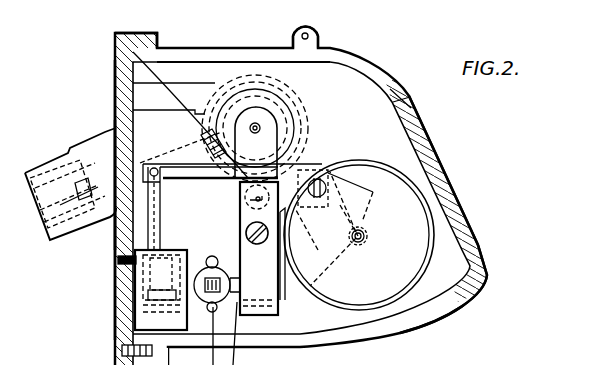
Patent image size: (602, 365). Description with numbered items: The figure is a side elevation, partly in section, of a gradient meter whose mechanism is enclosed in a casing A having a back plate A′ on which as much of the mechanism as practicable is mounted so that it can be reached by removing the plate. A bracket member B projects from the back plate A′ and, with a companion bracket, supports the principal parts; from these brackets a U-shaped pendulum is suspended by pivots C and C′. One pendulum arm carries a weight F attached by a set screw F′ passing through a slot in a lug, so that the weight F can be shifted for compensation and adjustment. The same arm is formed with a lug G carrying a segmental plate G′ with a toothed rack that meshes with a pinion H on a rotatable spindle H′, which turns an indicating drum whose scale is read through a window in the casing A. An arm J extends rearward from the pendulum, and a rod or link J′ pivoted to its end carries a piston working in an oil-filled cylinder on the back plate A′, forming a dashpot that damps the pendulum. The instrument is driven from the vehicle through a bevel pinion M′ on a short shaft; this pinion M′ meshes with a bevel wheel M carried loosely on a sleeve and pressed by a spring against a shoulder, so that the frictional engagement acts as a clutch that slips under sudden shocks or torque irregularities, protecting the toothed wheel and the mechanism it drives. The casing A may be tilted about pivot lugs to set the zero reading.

The casing A is at (270, 48).
The back plate A′ is at (118, 53).
The bevel pinion M′ is at (145, 33).
The bevel wheel M is at (262, 123).
The dimension indication I is at (165, 19).
The bracket member B is at (163, 178).
The arm J is at (133, 112).
The pivot C′ is at (283, 108).
The rod or link J′ is at (150, 238).
The weight F is at (143, 307).
The set screw F′ is at (142, 297).
The pivot C is at (257, 317).
The lug G is at (410, 107).
The segmental plate G′ is at (328, 173).
The pinion H is at (366, 234).
The spindle H′ is at (366, 239).